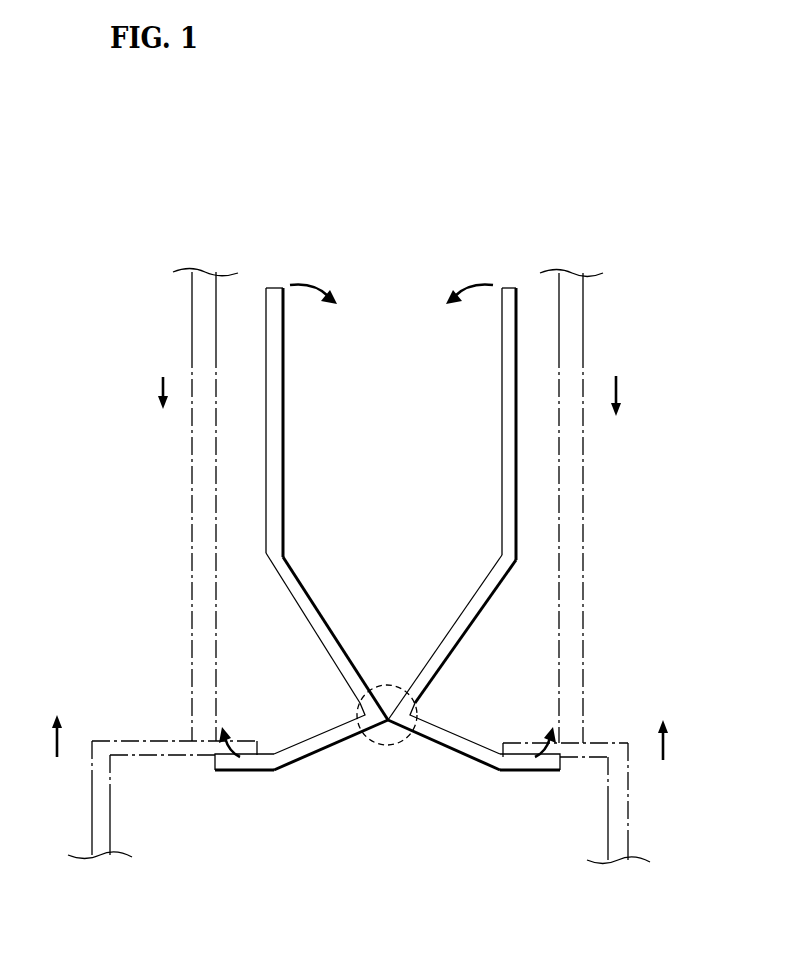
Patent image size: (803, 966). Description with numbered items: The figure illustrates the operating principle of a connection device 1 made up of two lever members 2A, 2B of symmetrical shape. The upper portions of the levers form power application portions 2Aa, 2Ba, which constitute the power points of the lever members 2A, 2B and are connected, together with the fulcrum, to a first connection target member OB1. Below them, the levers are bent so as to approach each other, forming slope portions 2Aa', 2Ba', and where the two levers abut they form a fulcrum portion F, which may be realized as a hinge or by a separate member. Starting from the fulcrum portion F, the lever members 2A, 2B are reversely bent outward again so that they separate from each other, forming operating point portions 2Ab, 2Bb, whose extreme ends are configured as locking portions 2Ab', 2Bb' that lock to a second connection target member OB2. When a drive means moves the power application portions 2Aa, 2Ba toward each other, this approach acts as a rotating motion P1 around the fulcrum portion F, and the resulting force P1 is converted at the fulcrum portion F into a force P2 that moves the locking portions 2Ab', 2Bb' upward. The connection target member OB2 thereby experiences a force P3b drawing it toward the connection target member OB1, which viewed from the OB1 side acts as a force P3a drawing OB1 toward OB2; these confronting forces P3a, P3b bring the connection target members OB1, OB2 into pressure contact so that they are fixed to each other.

The connection device 1 is at (161, 236).
The lever member 2A is at (266, 312).
The power application portion 2Aa is at (204, 422).
The slope portion 2Aa' is at (311, 636).
The operating point portion 2Ab is at (331, 764).
The locking portion 2Ab' is at (243, 799).
The lever member 2B is at (517, 447).
The power application portion 2Ba is at (573, 424).
The slope portion 2Ba' is at (464, 637).
The operating point portion 2Bb is at (444, 764).
The locking portion 2Bb' is at (531, 799).
The connection target member OB1 is at (584, 310).
The connection target member OB2 is at (597, 738).
The fulcrum portion F is at (387, 746).
The rotating motion P1 is at (391, 303).
The force P2 is at (387, 732).
The force P3a is at (390, 378).
The force P3b is at (359, 757).